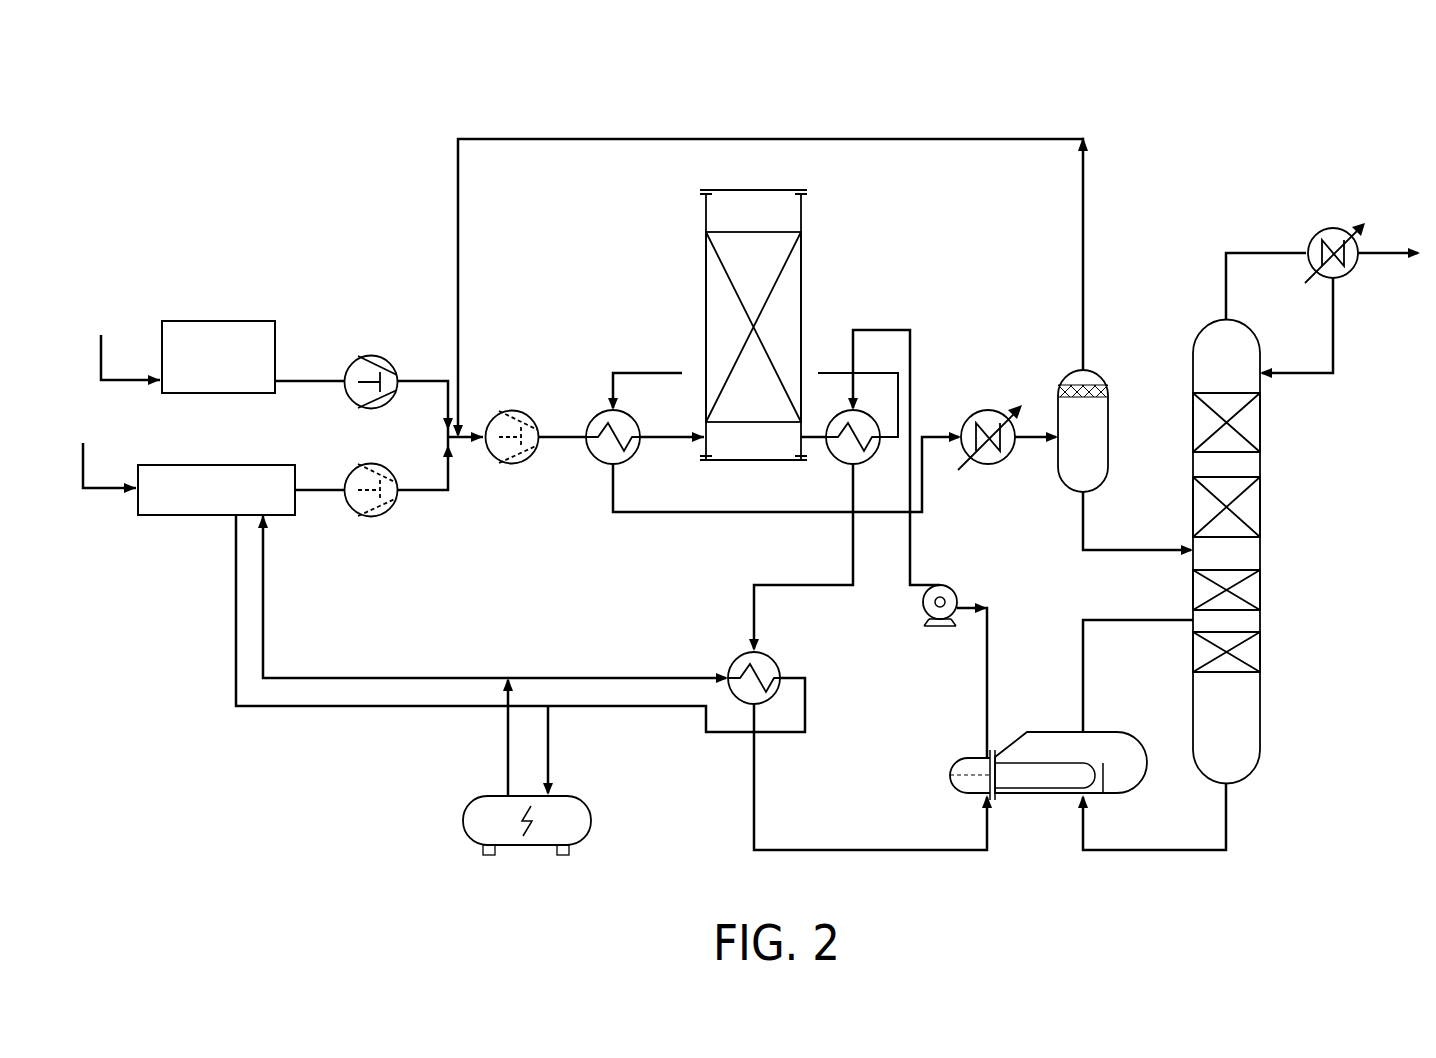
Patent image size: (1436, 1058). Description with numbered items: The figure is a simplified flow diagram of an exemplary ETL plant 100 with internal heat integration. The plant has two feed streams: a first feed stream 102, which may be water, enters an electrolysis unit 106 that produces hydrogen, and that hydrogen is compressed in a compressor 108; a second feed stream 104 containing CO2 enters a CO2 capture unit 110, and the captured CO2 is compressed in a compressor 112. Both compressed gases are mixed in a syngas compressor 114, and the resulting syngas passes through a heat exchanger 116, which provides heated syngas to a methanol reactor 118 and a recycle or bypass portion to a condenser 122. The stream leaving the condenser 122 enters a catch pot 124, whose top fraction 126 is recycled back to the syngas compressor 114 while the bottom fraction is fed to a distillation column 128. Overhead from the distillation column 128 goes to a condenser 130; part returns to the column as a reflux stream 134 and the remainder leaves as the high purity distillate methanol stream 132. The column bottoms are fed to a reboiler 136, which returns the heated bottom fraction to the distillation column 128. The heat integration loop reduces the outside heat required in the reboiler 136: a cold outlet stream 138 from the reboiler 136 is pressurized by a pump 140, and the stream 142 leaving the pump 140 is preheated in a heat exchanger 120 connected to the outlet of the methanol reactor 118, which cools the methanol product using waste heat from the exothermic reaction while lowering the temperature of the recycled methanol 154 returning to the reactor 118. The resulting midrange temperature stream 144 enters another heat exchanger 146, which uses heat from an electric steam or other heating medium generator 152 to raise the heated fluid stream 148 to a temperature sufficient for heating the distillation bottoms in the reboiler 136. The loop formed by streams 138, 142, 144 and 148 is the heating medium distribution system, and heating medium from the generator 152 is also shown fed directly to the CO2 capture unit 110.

The ETL plant 100 is at (1178, 118).
The first feed stream 102 is at (101, 335).
The second feed stream 104 is at (84, 455).
The electrolysis unit 106 is at (207, 321).
The compressor 108 is at (371, 355).
The CO2 capture unit 110 is at (215, 465).
The compressor 112 is at (352, 474).
The syngas compressor 114 is at (512, 410).
The heat exchanger 116 is at (598, 412).
The methanol reactor 118 is at (706, 300).
The heat exchanger 120 is at (838, 462).
The condenser 122 is at (988, 410).
The catch pot 124 is at (1108, 442).
The top fraction 126 is at (1085, 230).
The distillation column 128 is at (1262, 583).
The condenser 130 is at (1328, 228).
The distillate methanol stream 132 is at (1388, 250).
The reflux stream 134 is at (1335, 338).
The reboiler 136 is at (1032, 797).
The cold outlet stream 138 is at (990, 688).
The pump 140 is at (952, 588).
The stream 142 is at (893, 330).
The midrange temperature stream 144 is at (772, 585).
The heat exchanger 146 is at (735, 660).
The heated fluid stream 148 is at (808, 850).
The electric steam or other heating medium generator 152 is at (524, 848).
The recycled methanol 154 is at (832, 373).